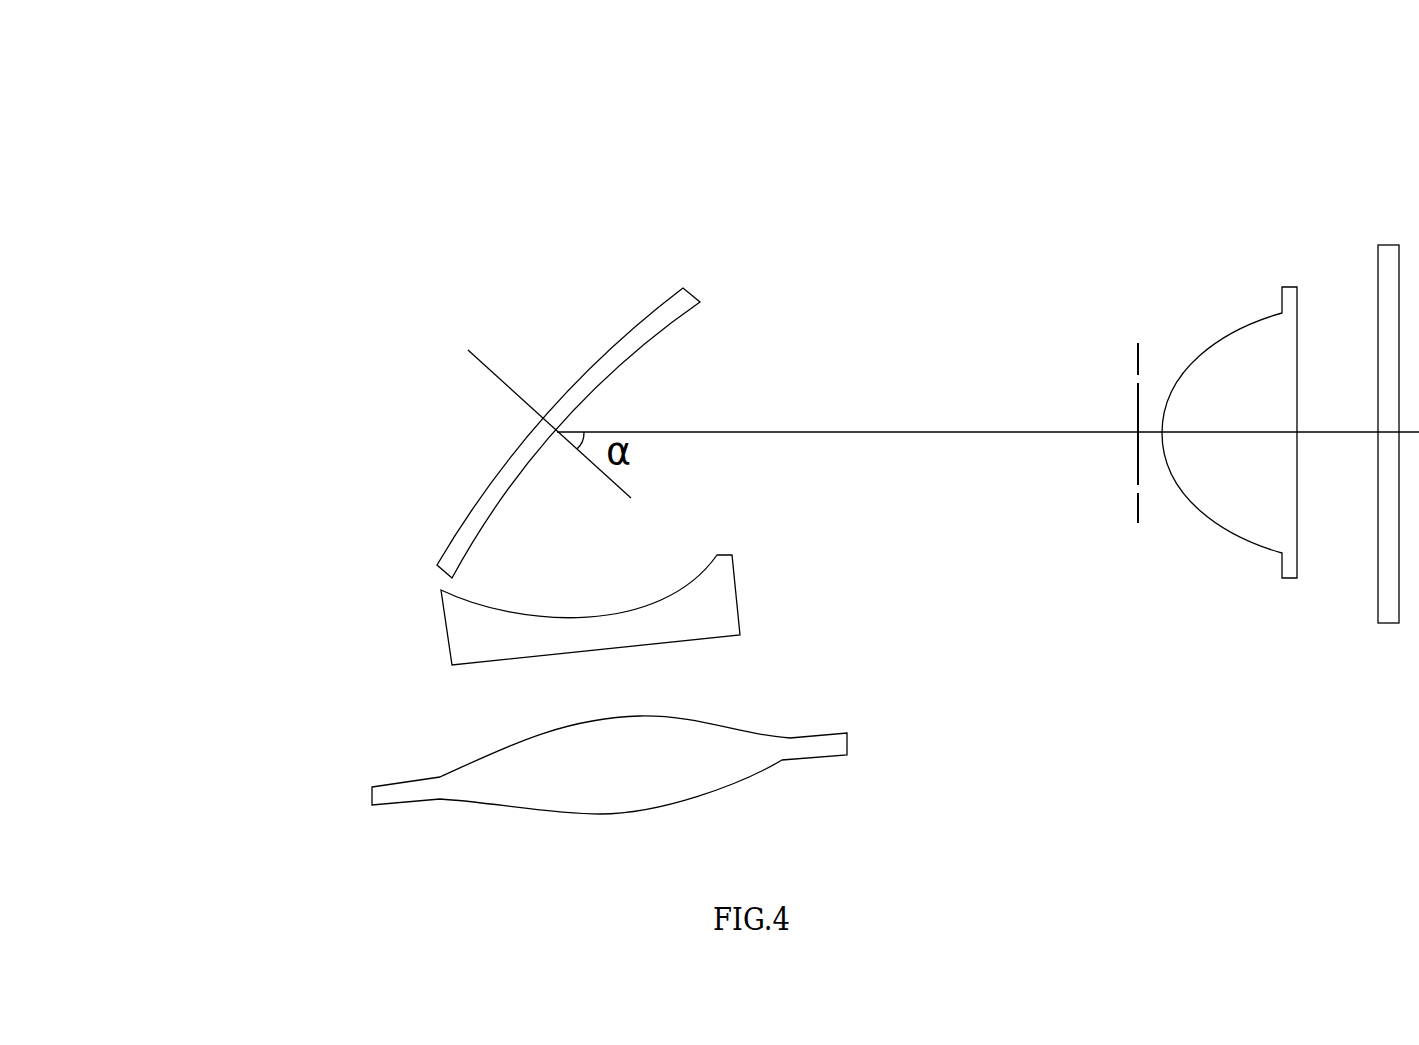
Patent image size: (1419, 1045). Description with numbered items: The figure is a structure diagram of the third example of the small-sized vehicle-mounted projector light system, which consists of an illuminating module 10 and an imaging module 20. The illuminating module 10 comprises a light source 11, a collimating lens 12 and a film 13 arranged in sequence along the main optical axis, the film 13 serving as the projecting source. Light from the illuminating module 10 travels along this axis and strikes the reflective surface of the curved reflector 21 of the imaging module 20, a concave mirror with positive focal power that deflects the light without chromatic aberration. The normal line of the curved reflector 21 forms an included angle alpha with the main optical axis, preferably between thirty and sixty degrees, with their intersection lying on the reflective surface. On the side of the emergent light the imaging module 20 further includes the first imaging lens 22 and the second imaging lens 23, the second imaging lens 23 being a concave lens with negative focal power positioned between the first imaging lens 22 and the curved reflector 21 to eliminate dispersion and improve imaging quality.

The illuminating module 10 is at (1253, 120).
The light source 11 is at (1390, 302).
The collimating lens 12 is at (1260, 355).
The film 13 is at (1138, 343).
The imaging module 20 is at (167, 407).
The curved reflector 21 is at (500, 480).
The first imaging lens 22 is at (447, 782).
The second imaging lens 23 is at (463, 632).